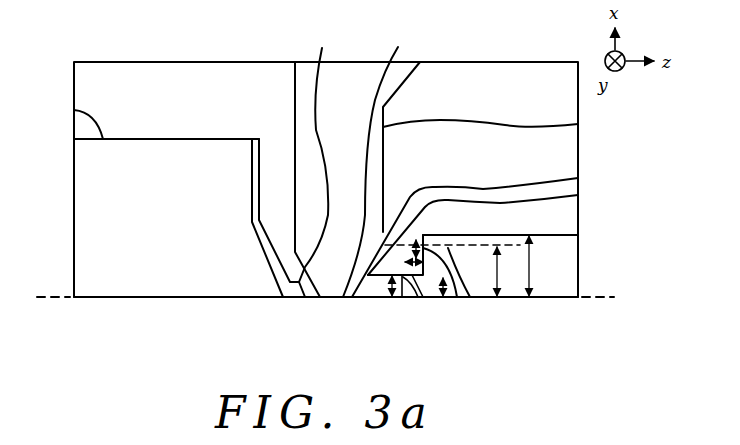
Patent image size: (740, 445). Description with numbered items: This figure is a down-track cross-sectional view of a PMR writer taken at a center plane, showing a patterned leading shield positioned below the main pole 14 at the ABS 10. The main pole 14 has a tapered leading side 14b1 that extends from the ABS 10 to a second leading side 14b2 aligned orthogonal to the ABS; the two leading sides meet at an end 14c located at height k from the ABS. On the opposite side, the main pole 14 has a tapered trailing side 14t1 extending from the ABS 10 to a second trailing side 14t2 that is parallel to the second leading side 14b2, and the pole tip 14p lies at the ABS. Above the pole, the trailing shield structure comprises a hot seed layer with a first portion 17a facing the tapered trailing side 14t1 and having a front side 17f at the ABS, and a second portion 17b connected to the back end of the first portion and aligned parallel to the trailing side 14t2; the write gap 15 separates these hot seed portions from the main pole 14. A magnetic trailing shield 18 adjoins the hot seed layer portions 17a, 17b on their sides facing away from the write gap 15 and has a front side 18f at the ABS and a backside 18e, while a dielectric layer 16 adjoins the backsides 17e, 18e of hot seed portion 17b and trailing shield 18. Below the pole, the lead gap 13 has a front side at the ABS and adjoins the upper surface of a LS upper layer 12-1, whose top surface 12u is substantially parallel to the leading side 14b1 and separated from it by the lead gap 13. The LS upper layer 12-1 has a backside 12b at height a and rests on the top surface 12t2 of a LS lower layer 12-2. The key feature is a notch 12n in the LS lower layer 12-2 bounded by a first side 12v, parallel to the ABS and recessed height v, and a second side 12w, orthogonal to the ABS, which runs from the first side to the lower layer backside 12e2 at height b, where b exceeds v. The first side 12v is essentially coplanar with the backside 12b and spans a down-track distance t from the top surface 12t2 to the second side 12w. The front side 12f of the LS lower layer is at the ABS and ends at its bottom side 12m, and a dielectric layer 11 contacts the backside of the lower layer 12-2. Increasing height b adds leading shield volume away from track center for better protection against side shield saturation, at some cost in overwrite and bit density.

The ABS 10 is at (327, 300).
The dielectric layer 11 is at (479, 77).
The LS upper layer 12-1 is at (375, 300).
The LS lower layer 12-2 is at (568, 270).
The backside of LS upper layer 12b is at (578, 195).
The LS lower layer backside 12e2 is at (560, 235).
The front side of LS lower layer 12f is at (566, 298).
The bottom side of LS lower layer 12m is at (578, 262).
The notch 12n is at (418, 236).
The top surface of LS lower layer 12t2 is at (421, 298).
The top surface of LS upper layer 12u is at (367, 298).
The first side of notch 12v is at (421, 299).
The second side of notch 12w is at (466, 298).
The lead gap 13 is at (357, 298).
The main pole 14 is at (367, 78).
The tapered leading side 14b1 is at (405, 132).
The second leading side 14b2 is at (578, 124).
The end of tapered leading side 14c is at (578, 178).
The main pole tip 14p is at (330, 300).
The tapered trailing side 14t1 is at (320, 157).
The second trailing side 14t2 is at (293, 102).
The write gap 15 is at (312, 298).
The dielectric layer 16 is at (88, 78).
The first portion of hot seed layer 17a is at (272, 258).
The second portion of hot seed layer 17b is at (250, 190).
The backside of hot seed layer portion 17e is at (250, 132).
The front side of hot seed layer 17f is at (293, 298).
The trailing shield 18 is at (88, 205).
The backside of trailing shield 18e is at (74, 110).
The front side of trailing shield 18f is at (114, 298).